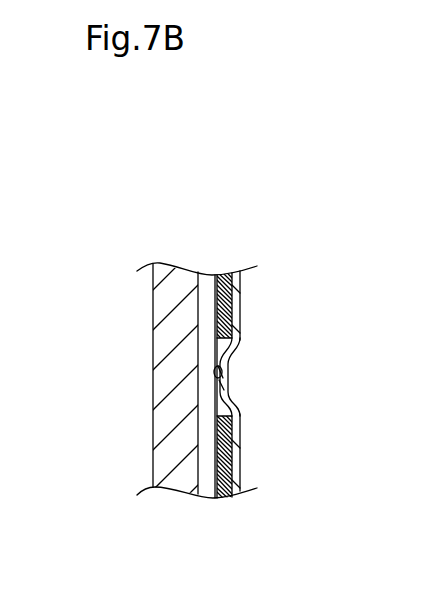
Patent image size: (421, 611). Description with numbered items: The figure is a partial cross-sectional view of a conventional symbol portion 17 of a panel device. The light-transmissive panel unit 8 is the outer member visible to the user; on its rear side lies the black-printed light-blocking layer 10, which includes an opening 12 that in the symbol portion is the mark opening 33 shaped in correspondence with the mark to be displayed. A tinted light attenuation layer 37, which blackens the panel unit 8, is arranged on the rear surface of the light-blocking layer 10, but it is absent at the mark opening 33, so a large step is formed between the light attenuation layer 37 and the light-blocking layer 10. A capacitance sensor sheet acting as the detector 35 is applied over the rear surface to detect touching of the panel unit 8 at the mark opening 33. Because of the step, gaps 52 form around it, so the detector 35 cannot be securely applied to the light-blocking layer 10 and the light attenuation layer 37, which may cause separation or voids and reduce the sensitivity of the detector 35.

The symbol portion 17 is at (110, 251).
The panel unit 8 is at (153, 345).
The light attenuation layer 37 is at (209, 272).
The light-blocking layer 10 is at (222, 272).
The detector 35 is at (240, 297).
The opening 12 is at (284, 374).
The mark opening 33 is at (236, 348).
The gaps 52 is at (236, 388).